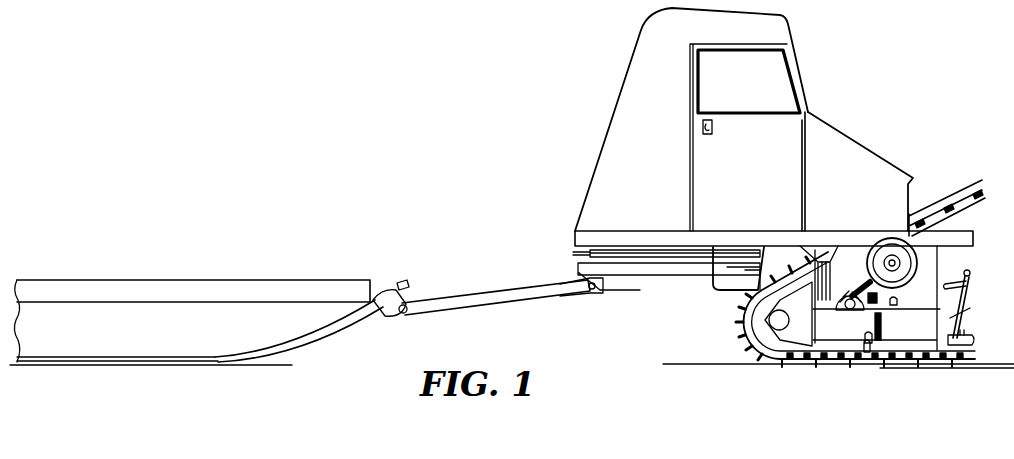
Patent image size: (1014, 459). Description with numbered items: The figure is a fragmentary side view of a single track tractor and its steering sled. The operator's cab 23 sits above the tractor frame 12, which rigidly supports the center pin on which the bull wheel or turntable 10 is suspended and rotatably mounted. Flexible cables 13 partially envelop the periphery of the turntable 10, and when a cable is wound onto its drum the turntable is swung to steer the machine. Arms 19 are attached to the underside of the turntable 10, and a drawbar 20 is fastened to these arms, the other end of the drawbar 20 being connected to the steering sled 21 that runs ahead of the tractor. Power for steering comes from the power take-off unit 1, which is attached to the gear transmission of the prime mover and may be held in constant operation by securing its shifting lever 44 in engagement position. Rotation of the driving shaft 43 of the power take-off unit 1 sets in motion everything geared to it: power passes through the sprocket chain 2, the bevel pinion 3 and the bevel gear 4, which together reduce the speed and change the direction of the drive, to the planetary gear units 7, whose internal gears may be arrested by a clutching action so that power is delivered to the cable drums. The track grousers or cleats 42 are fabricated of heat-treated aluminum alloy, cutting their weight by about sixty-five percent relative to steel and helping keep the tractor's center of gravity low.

The power take-off unit 1 is at (974, 312).
The sprocket chain 2 is at (882, 322).
The bevel pinion 3 is at (865, 306).
The bevel gear 4 is at (845, 308).
The planetary gear unit 7 is at (906, 276).
The turntable 10 is at (578, 250).
The frame 12 is at (713, 244).
The flexible cable 13 is at (716, 270).
The arm 19 is at (650, 276).
The drawbar 20 is at (503, 300).
The steering sled 21 is at (340, 280).
The cab 23 is at (604, 142).
The track grousers 42 is at (915, 212).
The driving shaft 43 is at (936, 340).
The shifting lever 44 is at (971, 281).